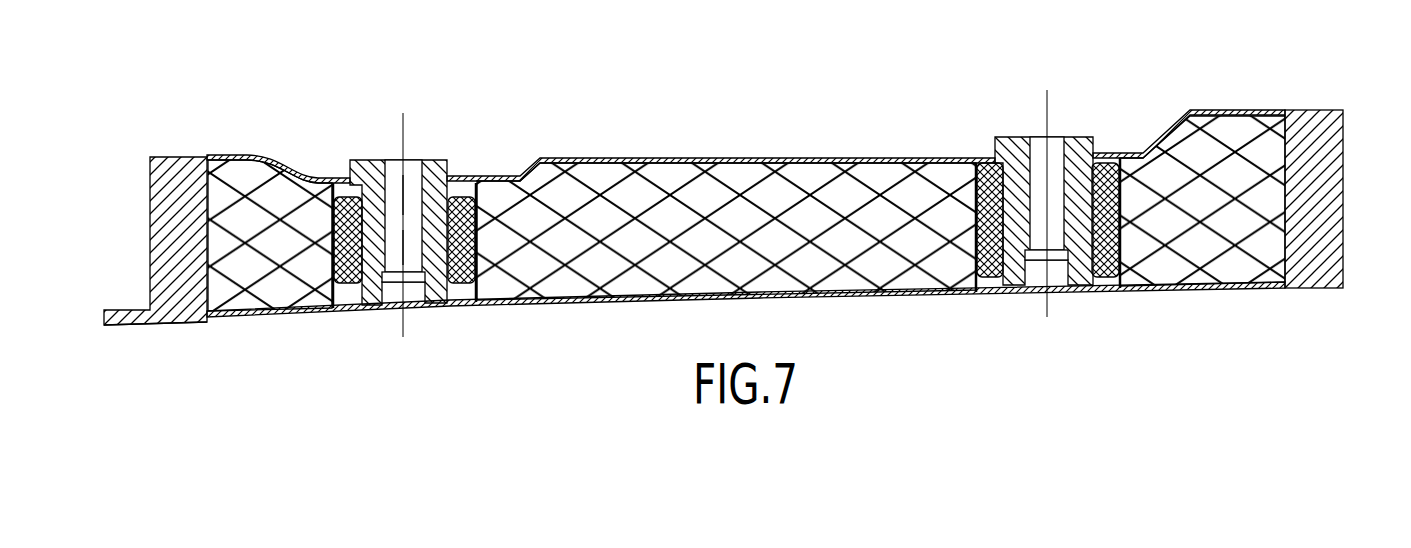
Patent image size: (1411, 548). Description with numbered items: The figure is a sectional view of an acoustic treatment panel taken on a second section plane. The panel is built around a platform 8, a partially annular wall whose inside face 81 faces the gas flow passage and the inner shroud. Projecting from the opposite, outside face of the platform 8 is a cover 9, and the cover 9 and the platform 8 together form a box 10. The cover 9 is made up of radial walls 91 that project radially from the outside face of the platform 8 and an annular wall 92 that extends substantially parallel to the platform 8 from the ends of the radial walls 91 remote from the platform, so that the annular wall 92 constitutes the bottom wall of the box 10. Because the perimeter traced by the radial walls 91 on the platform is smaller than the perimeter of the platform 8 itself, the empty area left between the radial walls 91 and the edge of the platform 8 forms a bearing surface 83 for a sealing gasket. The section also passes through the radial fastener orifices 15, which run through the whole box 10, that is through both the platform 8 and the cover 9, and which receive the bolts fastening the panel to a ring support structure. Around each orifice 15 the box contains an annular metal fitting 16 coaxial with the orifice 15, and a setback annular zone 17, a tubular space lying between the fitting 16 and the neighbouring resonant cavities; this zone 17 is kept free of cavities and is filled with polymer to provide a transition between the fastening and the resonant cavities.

The platform 8 is at (256, 318).
The cover 9 is at (736, 244).
The box 10 is at (746, 102).
The radial fastener orifice 15 is at (412, 290).
The annular metal fitting 16 is at (370, 268).
The setback annular zone 17 is at (333, 258).
The inside face 81 is at (162, 323).
The bearing surface 83 is at (115, 310).
The radial wall 91 is at (170, 248).
The annular wall 92 is at (1254, 108).